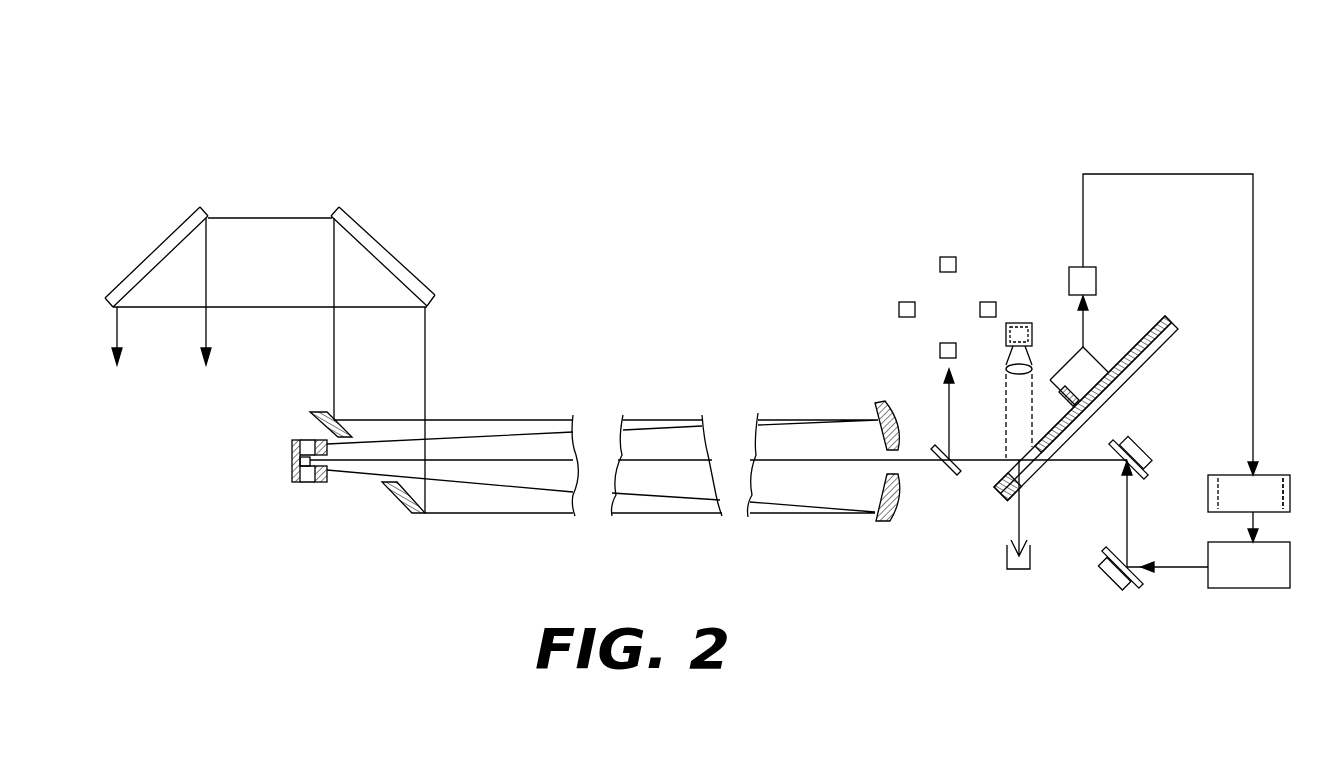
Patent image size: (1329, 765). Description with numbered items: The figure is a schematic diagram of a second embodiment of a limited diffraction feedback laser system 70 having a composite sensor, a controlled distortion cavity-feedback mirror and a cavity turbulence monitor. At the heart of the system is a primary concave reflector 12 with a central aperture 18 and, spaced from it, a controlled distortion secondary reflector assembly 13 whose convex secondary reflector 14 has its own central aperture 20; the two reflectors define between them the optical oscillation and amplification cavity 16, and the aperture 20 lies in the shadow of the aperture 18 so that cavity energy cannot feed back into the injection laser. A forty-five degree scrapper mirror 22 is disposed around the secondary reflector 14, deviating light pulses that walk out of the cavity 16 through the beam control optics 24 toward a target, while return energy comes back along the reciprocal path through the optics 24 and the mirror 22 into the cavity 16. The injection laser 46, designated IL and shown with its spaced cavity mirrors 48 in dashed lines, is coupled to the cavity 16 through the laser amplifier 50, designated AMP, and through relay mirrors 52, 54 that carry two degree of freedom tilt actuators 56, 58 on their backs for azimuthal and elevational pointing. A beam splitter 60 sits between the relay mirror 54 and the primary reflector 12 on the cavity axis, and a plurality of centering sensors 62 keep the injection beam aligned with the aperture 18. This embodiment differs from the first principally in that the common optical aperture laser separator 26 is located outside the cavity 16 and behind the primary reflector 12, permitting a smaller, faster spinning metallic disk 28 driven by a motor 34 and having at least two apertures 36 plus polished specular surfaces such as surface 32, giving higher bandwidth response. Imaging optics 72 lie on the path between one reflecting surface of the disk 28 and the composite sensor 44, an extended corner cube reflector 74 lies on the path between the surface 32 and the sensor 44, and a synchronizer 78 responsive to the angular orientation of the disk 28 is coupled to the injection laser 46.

The primary concave reflector 12 is at (877, 402).
The controlled distortion secondary reflector assembly 13 is at (290, 436).
The secondary reflector 14 is at (322, 482).
The optical oscillation and amplification cavity 16 is at (610, 416).
The central aperture 18 is at (878, 472).
The central aperture 20 is at (325, 481).
The scrapper mirror 22 is at (405, 505).
The beam control optics 24 is at (352, 206).
The laser separator 26 is at (1097, 328).
The metallic disk 28 is at (1112, 362).
The specular surface 32 is at (1112, 388).
The motor 34 is at (1072, 392).
The apertures 36 is at (1030, 470).
The composite sensor 44 is at (1032, 332).
The injection laser 46 is at (1208, 492).
The cavity mirrors 48 is at (1290, 493).
The laser amplifier 50 is at (1210, 545).
The relay mirror 52 is at (1101, 553).
The relay mirror 54 is at (1150, 465).
The tilt actuator 56 is at (1098, 577).
The tilt actuator 58 is at (1138, 440).
The beam splitter 60 is at (950, 474).
The injection laser centering sensors 62 is at (912, 276).
The limited diffraction feedback laser system 70 is at (1162, 332).
The imaging optics 72 is at (1008, 372).
The extended corner cube reflector 74 is at (1006, 553).
The synchronizer 78 is at (1093, 278).